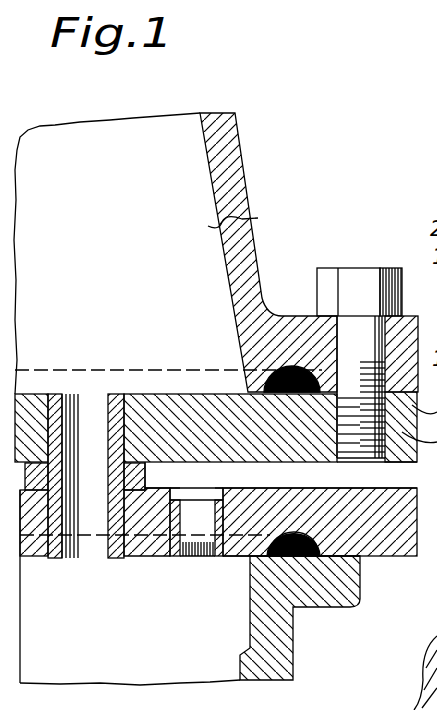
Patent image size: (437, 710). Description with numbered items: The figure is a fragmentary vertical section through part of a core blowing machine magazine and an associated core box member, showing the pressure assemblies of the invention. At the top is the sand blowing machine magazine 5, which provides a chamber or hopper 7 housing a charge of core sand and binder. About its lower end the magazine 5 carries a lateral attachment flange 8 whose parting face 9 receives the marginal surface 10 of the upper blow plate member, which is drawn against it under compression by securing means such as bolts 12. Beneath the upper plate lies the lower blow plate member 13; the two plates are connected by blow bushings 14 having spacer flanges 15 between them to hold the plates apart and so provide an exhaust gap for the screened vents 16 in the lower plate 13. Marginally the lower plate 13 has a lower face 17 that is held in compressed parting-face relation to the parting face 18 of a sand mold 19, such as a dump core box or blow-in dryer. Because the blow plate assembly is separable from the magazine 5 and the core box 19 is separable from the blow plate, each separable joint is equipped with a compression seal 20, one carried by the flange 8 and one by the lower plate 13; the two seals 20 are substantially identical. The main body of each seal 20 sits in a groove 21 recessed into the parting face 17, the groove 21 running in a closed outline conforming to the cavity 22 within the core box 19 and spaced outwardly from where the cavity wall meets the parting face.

The sand blowing machine magazine 5 is at (224, 167).
The chamber or hopper 7 is at (241, 219).
The lateral attachment flange 8 is at (405, 324).
The parting face 9 is at (411, 427).
The surface 10 is at (220, 393).
The bolts 12 is at (362, 282).
The lower blow plate member 13 is at (430, 688).
The blow bushings 14 is at (118, 553).
The spacer flanges 15 is at (146, 477).
The screened vents 16 is at (193, 555).
The lower face 17 is at (395, 557).
The parting face 18 is at (248, 558).
The sand mold 19 is at (280, 632).
The compression seal 20 is at (297, 376).
The groove 21 is at (284, 373).
The cavity 22 is at (250, 630).